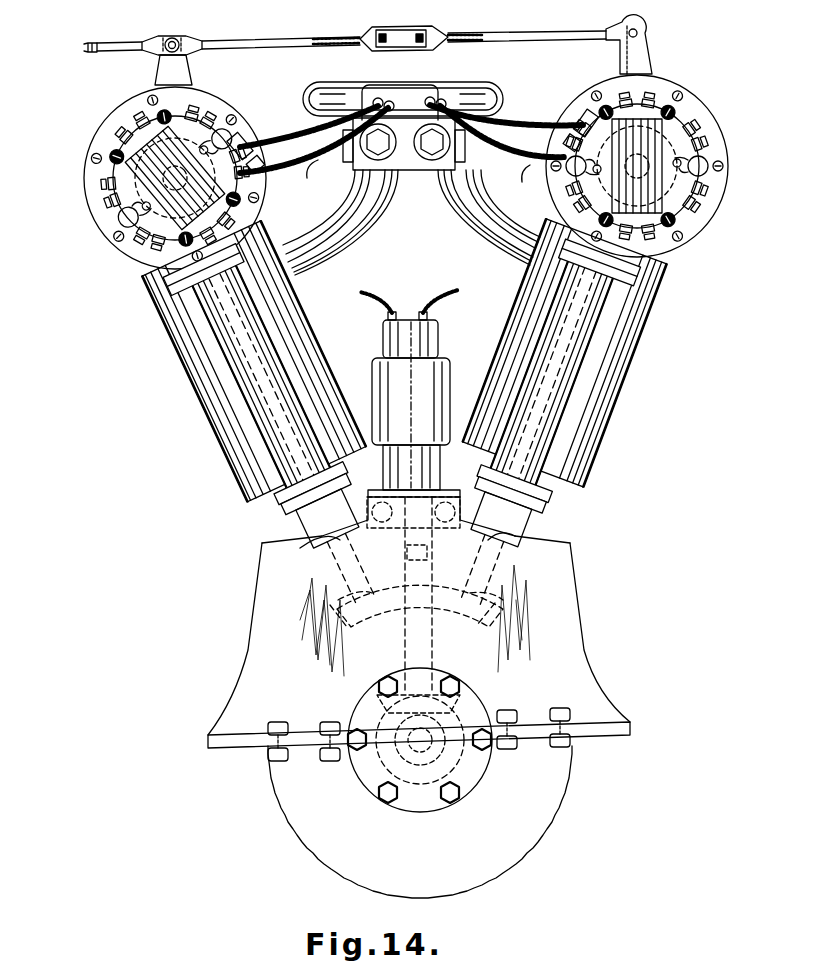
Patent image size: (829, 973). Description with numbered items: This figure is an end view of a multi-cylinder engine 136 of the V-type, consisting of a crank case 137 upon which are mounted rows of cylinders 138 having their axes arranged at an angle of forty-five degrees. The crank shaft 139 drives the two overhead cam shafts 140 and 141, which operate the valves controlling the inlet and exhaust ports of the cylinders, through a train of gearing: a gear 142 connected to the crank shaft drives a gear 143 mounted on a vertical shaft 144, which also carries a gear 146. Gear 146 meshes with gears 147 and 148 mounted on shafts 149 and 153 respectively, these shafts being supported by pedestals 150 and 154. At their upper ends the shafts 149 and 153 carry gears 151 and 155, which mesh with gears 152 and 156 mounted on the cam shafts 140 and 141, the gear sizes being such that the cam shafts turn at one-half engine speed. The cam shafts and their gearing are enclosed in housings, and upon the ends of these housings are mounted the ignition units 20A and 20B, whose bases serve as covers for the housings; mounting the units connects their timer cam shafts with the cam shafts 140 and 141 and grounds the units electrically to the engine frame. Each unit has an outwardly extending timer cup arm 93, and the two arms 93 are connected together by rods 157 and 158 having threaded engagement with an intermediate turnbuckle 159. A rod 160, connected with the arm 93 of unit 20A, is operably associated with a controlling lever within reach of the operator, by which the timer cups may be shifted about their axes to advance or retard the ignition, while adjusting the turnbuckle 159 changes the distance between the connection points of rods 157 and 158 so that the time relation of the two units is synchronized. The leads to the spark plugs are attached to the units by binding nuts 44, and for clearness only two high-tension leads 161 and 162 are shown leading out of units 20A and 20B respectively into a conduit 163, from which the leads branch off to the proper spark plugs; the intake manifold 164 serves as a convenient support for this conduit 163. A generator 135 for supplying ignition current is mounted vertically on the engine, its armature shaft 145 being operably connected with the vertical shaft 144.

The rod 160 is at (95, 44).
The rod 157 is at (247, 43).
The turnbuckle 159 is at (433, 38).
The rod 158 is at (517, 33).
The arm 93 is at (175, 71).
The ignition unit 20A is at (154, 188).
The ignition unit 20B is at (663, 180).
The cam shaft 140 is at (165, 175).
The cam shaft 141 is at (630, 152).
The gear 152 is at (133, 230).
The gear 151 is at (172, 226).
The gear 156 is at (692, 196).
The gear 155 is at (650, 208).
The binding nuts 44 is at (233, 138).
The conduit 163 is at (396, 85).
The intake manifold 164 is at (446, 165).
The high-tension lead 161 is at (318, 160).
The high-tension lead 162 is at (530, 165).
The multi-cylinder engine 136 is at (176, 356).
The cylinders 138 is at (196, 410).
The pedestal 150 is at (270, 437).
The pedestal 154 is at (560, 437).
The generator 135 is at (421, 377).
The crank case 137 is at (581, 575).
The shaft 149 is at (318, 541).
The shaft 153 is at (503, 548).
The armature shaft 145 is at (405, 540).
The gear 146 is at (393, 590).
The gear 147 is at (392, 607).
The gear 148 is at (487, 618).
The vertical shaft 144 is at (430, 653).
The gear 143 is at (456, 703).
The gear 142 is at (462, 766).
The crank shaft 139 is at (415, 745).